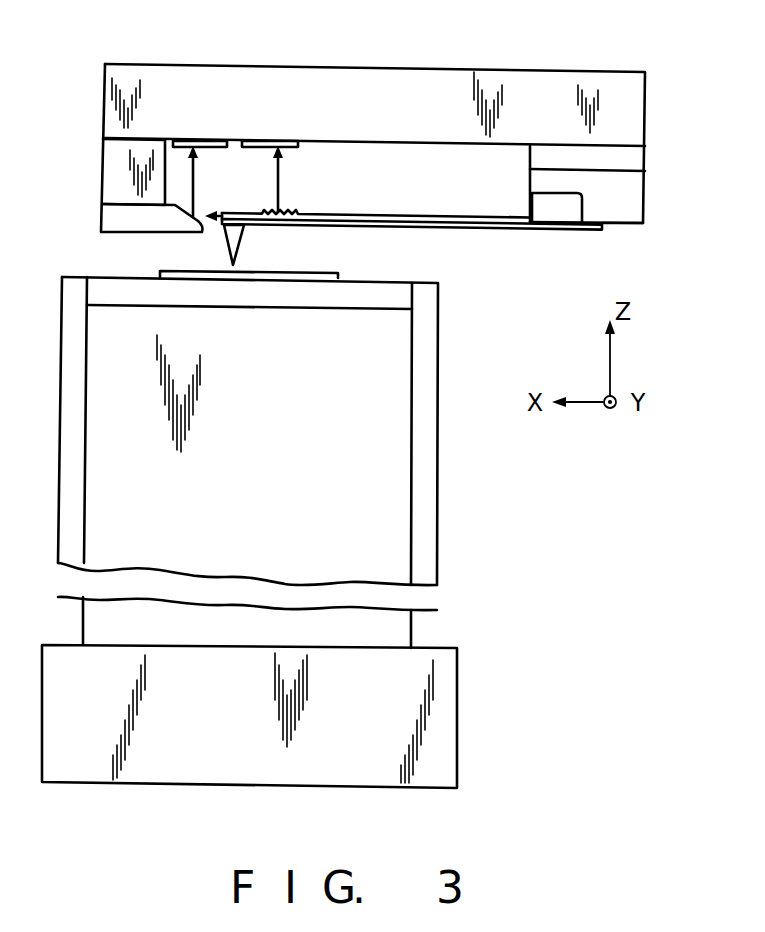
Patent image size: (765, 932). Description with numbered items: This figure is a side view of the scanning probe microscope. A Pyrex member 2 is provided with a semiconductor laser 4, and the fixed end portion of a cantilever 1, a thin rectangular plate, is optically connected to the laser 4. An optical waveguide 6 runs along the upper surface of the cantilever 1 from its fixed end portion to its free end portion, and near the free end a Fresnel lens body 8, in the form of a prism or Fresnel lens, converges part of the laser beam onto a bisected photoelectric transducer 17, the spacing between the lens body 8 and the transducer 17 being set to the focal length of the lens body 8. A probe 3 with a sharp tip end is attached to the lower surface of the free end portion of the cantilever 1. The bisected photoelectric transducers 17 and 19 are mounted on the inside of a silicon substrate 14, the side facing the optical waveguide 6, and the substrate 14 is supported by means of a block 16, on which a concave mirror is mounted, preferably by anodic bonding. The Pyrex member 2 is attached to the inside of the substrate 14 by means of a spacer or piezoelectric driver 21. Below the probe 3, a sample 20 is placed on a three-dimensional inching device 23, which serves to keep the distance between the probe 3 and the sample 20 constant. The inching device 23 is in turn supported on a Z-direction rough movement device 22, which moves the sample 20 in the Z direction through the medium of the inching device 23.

The cantilever 1 is at (420, 224).
The Pyrex member 2 is at (630, 201).
The probe 3 is at (238, 229).
The semiconductor laser 4 is at (548, 214).
The optical waveguide 6 is at (445, 215).
The Fresnel lens body 8 is at (291, 213).
The silicon substrate 14 is at (428, 80).
The block 16 is at (108, 156).
The bisected photoelectric transducer 17 is at (289, 138).
The bisected photoelectric transducer 19 is at (215, 138).
The sample 20 is at (338, 273).
The piezoelectric driver 21 is at (634, 163).
The Z-direction rough movement device 22 is at (443, 705).
The three-dimensional inching device 23 is at (395, 471).